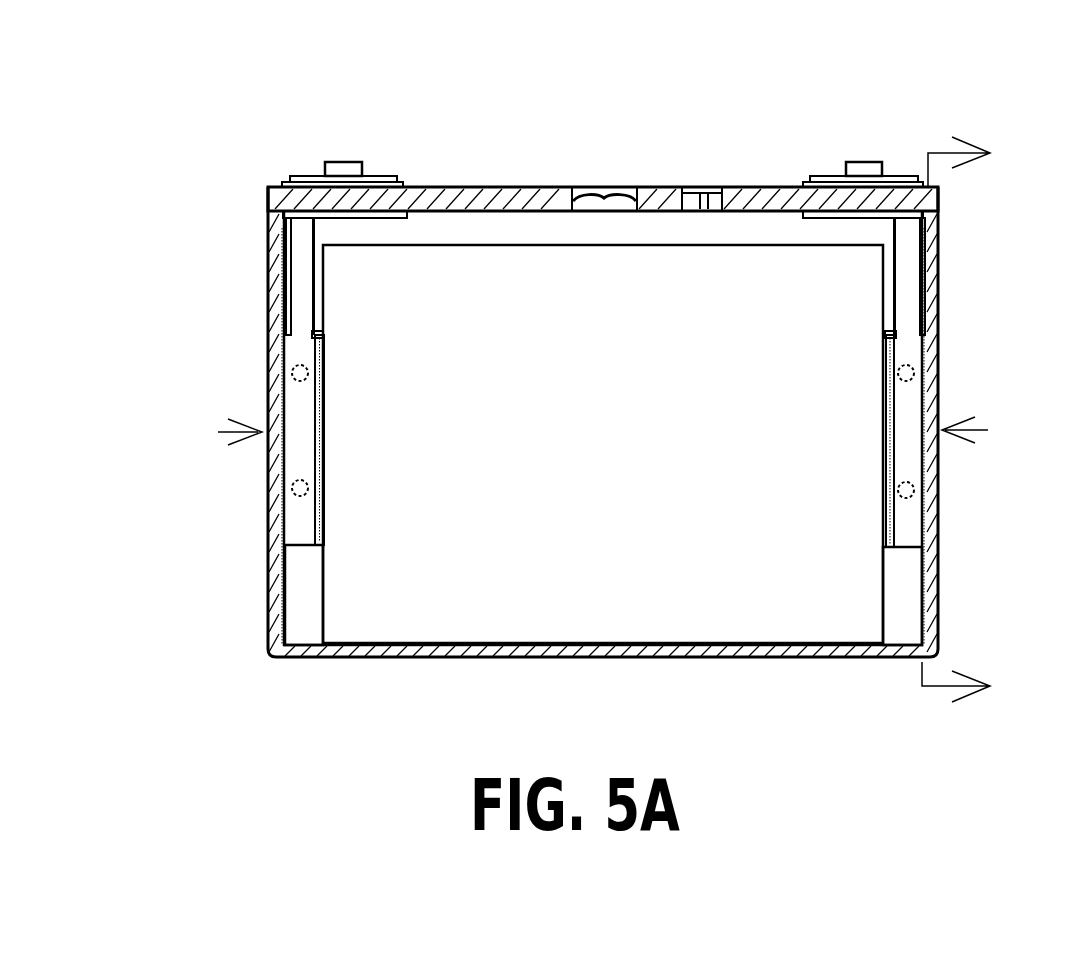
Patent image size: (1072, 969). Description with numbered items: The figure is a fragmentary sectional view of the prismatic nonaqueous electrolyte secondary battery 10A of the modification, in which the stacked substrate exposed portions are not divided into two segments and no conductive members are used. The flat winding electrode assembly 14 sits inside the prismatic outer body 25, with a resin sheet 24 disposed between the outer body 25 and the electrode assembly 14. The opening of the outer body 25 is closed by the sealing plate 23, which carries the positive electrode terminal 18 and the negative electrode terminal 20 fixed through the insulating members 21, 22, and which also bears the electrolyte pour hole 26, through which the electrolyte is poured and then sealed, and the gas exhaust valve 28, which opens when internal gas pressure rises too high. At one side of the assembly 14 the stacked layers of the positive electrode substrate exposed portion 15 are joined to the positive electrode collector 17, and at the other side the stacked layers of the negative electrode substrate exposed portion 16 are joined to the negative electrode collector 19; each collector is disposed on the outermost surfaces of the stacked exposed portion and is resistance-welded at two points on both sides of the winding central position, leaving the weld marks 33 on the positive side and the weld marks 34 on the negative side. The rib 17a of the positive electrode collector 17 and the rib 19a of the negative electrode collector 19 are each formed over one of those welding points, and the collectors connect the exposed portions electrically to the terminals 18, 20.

The prismatic nonaqueous electrolyte secondary battery 10A is at (225, 79).
The flat winding electrode assembly 14 is at (582, 575).
The positive electrode substrate exposed portion 15 is at (905, 585).
The negative electrode substrate exposed portion 16 is at (293, 573).
The positive electrode collector 17 is at (905, 343).
The rib 17a is at (890, 518).
The positive electrode terminal 18 is at (866, 168).
The negative electrode collector 19 is at (302, 310).
The rib 19a is at (323, 350).
The negative electrode terminal 20 is at (350, 168).
The insulating member 21 is at (800, 186).
The insulating member 22 is at (417, 186).
The sealing plate 23 is at (496, 186).
The resin sheet 24 is at (282, 627).
The prismatic outer body 25 is at (742, 655).
The electrolyte pour hole 26 is at (700, 186).
The gas exhaust valve 28 is at (584, 186).
The weld mark 33 is at (915, 487).
The weld mark 34 is at (293, 373).